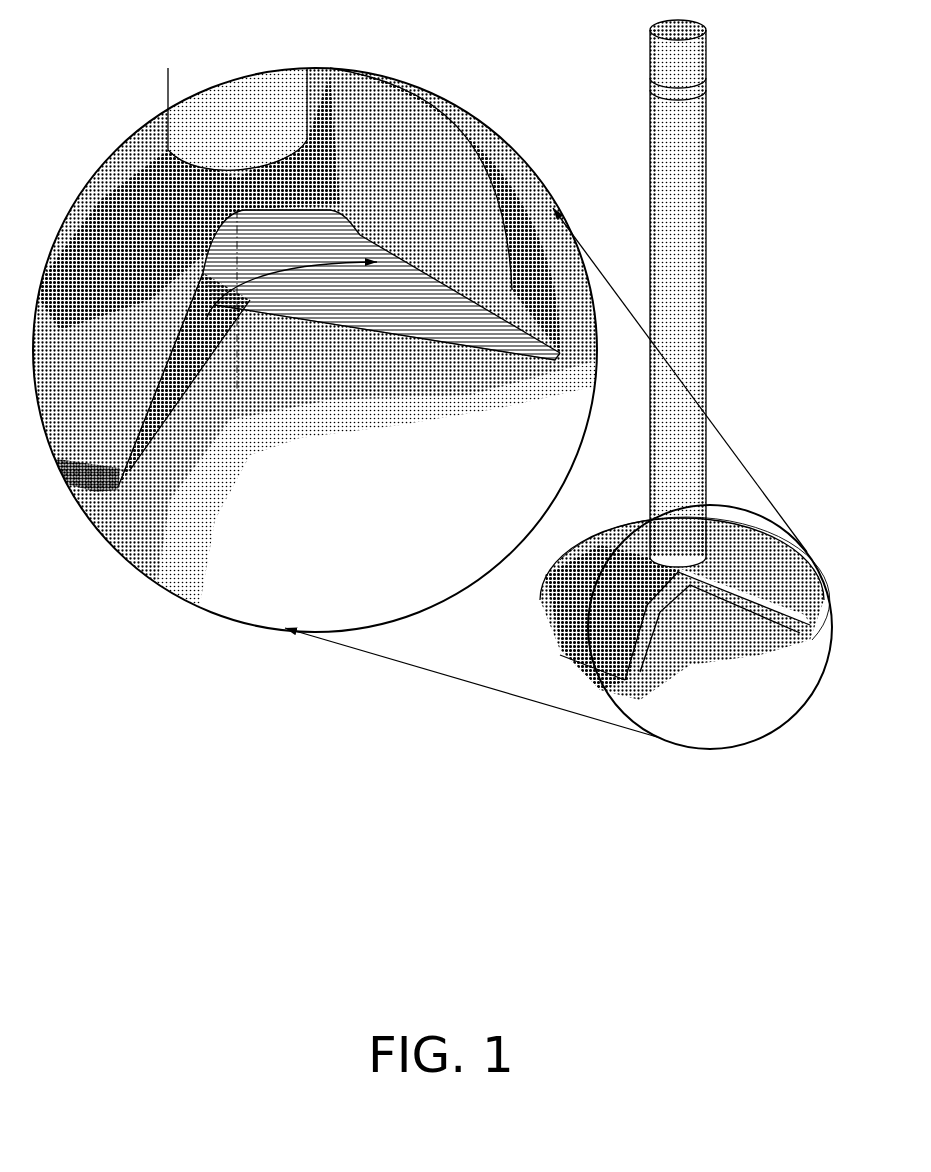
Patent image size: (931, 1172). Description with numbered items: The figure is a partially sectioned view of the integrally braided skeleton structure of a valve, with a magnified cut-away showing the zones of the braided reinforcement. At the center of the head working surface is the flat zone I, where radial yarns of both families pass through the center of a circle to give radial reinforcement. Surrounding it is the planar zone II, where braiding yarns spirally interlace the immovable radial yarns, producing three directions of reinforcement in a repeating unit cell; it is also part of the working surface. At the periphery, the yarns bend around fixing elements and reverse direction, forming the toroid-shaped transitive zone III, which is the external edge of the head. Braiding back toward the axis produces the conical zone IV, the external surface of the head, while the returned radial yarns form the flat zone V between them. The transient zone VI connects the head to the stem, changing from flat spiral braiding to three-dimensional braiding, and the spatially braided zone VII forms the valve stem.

The flat zone with radial reinforcement I is at (260, 290).
The flat braided reinforced zone II is at (180, 403).
The continuous transitive zone III is at (140, 467).
The conical zone IV is at (173, 363).
The flat zone with straight radial reinforcement V is at (243, 240).
The transient zone VI is at (300, 220).
The zone of spatially braided architecture VII is at (263, 138).